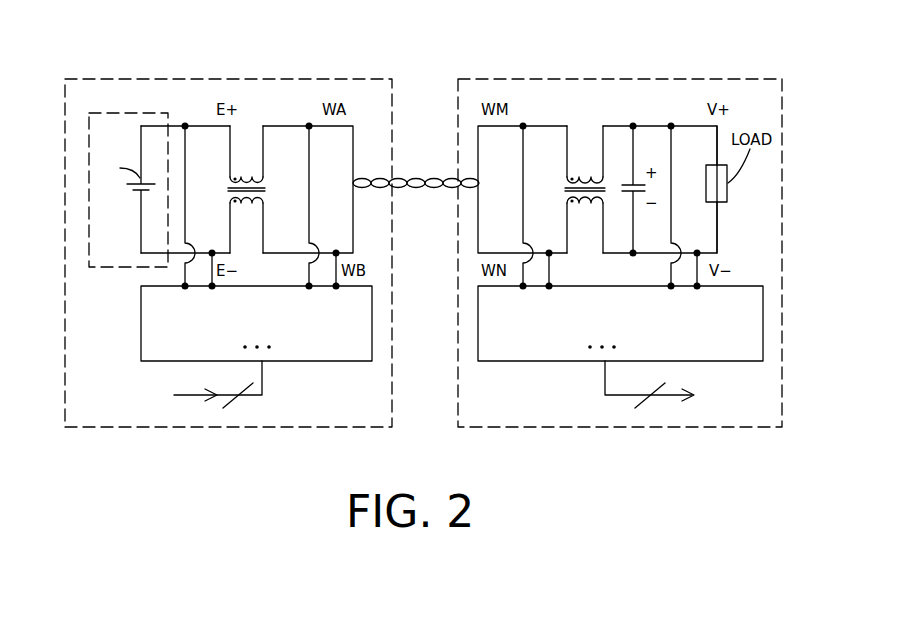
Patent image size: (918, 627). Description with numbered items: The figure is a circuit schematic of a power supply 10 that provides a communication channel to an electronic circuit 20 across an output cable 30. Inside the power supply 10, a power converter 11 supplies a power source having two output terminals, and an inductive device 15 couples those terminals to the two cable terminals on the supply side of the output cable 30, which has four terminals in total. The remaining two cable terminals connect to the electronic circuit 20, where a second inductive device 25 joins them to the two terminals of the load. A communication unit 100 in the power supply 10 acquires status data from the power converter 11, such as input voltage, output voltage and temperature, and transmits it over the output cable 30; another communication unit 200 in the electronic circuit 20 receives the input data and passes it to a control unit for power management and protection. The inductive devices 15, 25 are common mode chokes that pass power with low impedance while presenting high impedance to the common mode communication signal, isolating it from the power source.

The power supply 10 is at (350, 78).
The power converter 11 is at (122, 112).
The inductive device 15 is at (232, 181).
The output cable 30 is at (433, 180).
The electronic circuit 20 is at (711, 78).
The inductive device 25 is at (567, 180).
The communication unit 100 is at (141, 323).
The communication unit 200 is at (763, 329).